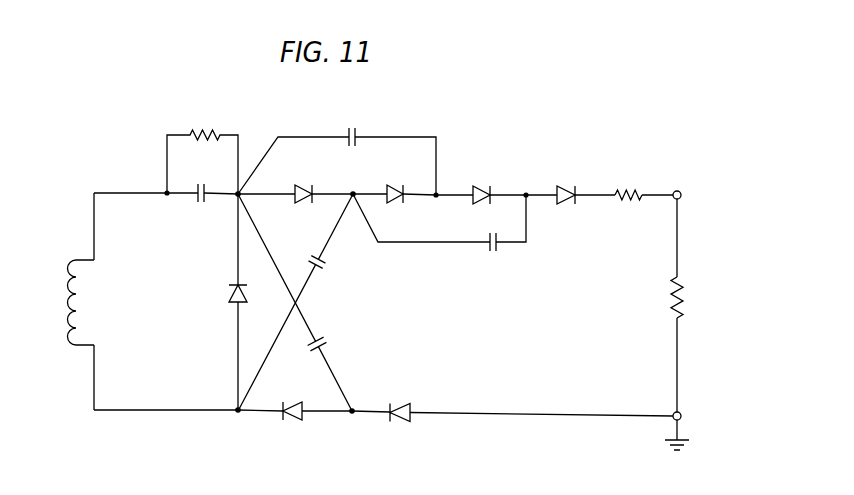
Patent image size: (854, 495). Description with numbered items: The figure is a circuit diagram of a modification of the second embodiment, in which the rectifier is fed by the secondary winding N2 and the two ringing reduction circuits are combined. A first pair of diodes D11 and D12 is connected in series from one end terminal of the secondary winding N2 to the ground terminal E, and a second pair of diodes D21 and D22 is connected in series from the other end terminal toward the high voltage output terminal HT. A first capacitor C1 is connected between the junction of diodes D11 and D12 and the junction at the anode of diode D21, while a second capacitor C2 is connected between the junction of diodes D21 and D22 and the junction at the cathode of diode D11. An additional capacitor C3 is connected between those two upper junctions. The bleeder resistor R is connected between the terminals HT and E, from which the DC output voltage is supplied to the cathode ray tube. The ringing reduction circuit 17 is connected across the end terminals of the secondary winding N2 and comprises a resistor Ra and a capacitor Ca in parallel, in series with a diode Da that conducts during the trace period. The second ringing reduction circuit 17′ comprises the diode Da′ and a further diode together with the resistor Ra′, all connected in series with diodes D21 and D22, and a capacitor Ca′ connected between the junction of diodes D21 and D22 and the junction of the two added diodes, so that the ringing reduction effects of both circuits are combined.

The resistor Ra is at (206, 130).
The capacitor Ca is at (196, 204).
The additional capacitor C3 is at (360, 130).
The first diode of second pair D21 is at (298, 185).
The second diode of second pair D22 is at (390, 185).
The diode Da′ is at (476, 186).
The resistor Ra′ is at (626, 190).
The high voltage output terminal HT is at (680, 191).
The ringing reduction circuit 17′ is at (583, 250).
The capacitor Ca′ is at (497, 250).
The second capacitor C2 is at (327, 264).
The first capacitor C1 is at (326, 340).
The ringing reduction circuit 17 is at (198, 276).
The secondary winding N2 is at (84, 306).
The diode Da is at (228, 300).
The first diode of first pair D11 is at (289, 403).
The second diode of first pair D12 is at (400, 404).
The bleeder resistor R is at (683, 304).
The ground terminal E is at (681, 412).